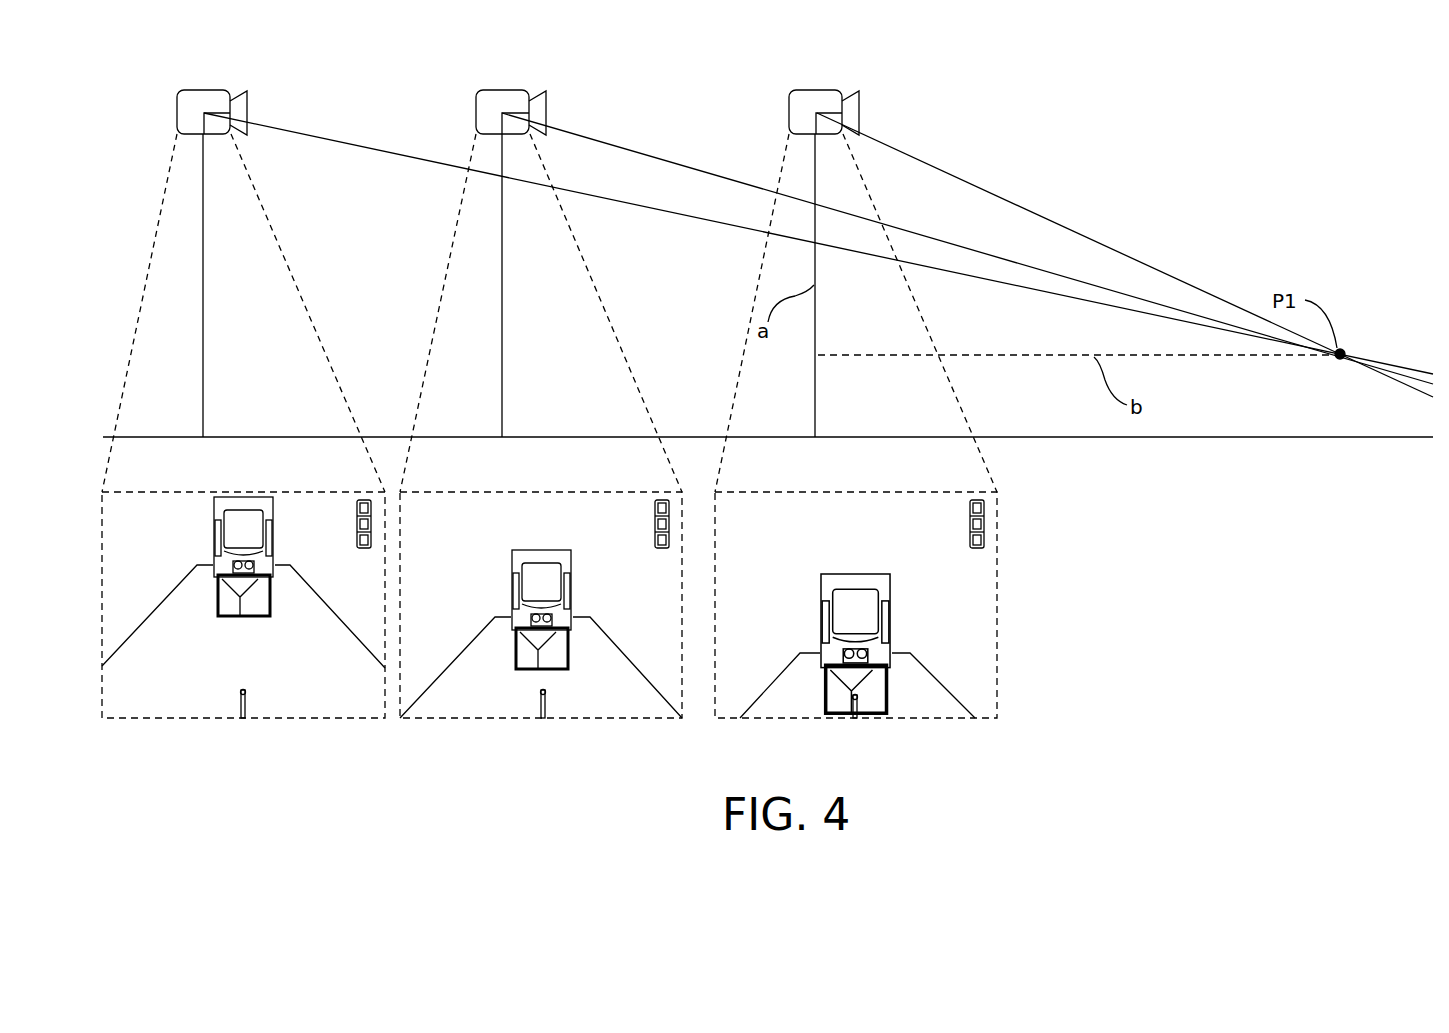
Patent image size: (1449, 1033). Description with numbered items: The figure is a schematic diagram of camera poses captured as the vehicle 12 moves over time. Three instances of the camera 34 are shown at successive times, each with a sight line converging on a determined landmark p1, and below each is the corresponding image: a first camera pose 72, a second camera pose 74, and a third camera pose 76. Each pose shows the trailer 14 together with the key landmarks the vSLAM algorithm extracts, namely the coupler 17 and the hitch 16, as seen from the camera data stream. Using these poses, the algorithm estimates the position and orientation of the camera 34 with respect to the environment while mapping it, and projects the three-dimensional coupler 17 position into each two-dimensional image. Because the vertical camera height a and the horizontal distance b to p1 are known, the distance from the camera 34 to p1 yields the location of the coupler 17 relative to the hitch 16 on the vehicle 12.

The vehicle camera 34 is at (207, 100).
The trailer 14 is at (216, 533).
The coupler 17 is at (244, 618).
The vehicle 12 is at (356, 522).
The hitch 16 is at (242, 692).
The first camera pose 72 is at (306, 720).
The second camera pose 74 is at (595, 720).
The third camera pose 76 is at (950, 720).